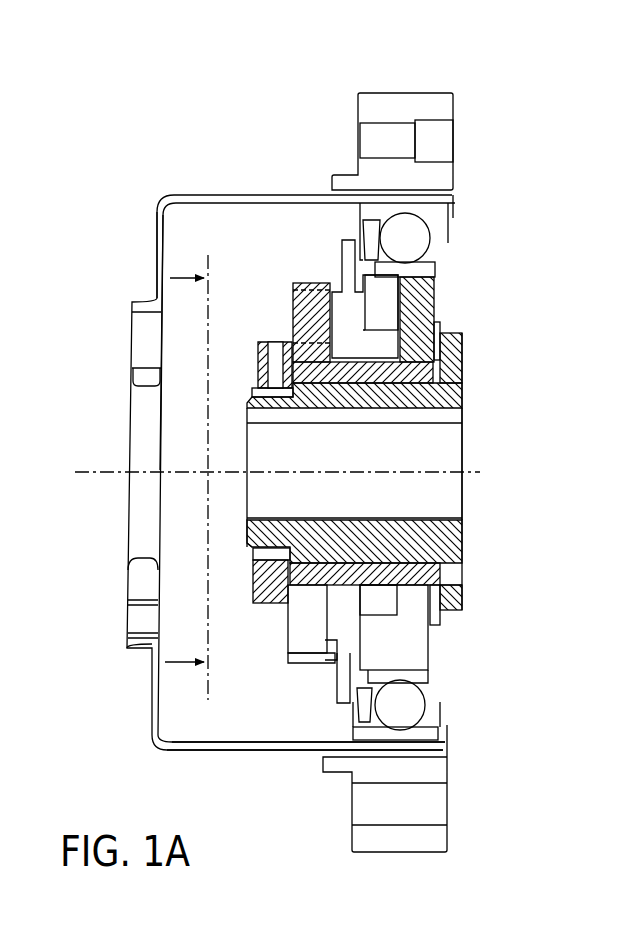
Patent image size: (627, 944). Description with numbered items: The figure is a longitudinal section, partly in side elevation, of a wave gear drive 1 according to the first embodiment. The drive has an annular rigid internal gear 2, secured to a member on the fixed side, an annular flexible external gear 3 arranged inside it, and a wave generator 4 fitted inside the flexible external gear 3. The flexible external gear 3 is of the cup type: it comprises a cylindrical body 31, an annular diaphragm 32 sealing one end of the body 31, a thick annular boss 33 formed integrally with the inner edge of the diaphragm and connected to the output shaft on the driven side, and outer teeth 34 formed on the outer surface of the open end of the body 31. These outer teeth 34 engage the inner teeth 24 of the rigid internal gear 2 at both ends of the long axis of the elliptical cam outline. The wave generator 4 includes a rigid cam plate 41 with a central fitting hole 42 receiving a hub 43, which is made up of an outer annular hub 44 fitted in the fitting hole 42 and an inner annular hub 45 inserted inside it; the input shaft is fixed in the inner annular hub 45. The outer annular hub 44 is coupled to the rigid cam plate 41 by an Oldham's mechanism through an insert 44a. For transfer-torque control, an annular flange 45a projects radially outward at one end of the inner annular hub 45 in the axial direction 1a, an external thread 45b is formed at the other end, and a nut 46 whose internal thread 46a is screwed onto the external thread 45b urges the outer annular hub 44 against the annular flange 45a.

The wave gear drive 1 is at (144, 168).
The axial direction 1a is at (103, 470).
The annular rigid internal gear 2 is at (356, 103).
The annular flexible external gear 3 is at (291, 468).
The wave generator 4 is at (385, 471).
The inner teeth 24 is at (427, 752).
The cylindrical body 31 is at (257, 742).
The annular diaphragm 32 is at (155, 706).
The thick annular boss 33 is at (147, 578).
The outer teeth 34 is at (327, 755).
The rigid cam plate 41 is at (415, 313).
The fitting hole 42 is at (370, 376).
The hub 43 is at (426, 471).
The outer annular hub 44 is at (387, 410).
The insert 44a is at (342, 672).
The inner annular hub 45 is at (372, 392).
The annular flange 45a is at (447, 591).
The external thread 45b is at (247, 556).
The nut 46 is at (272, 603).
The internal thread 46a is at (267, 552).